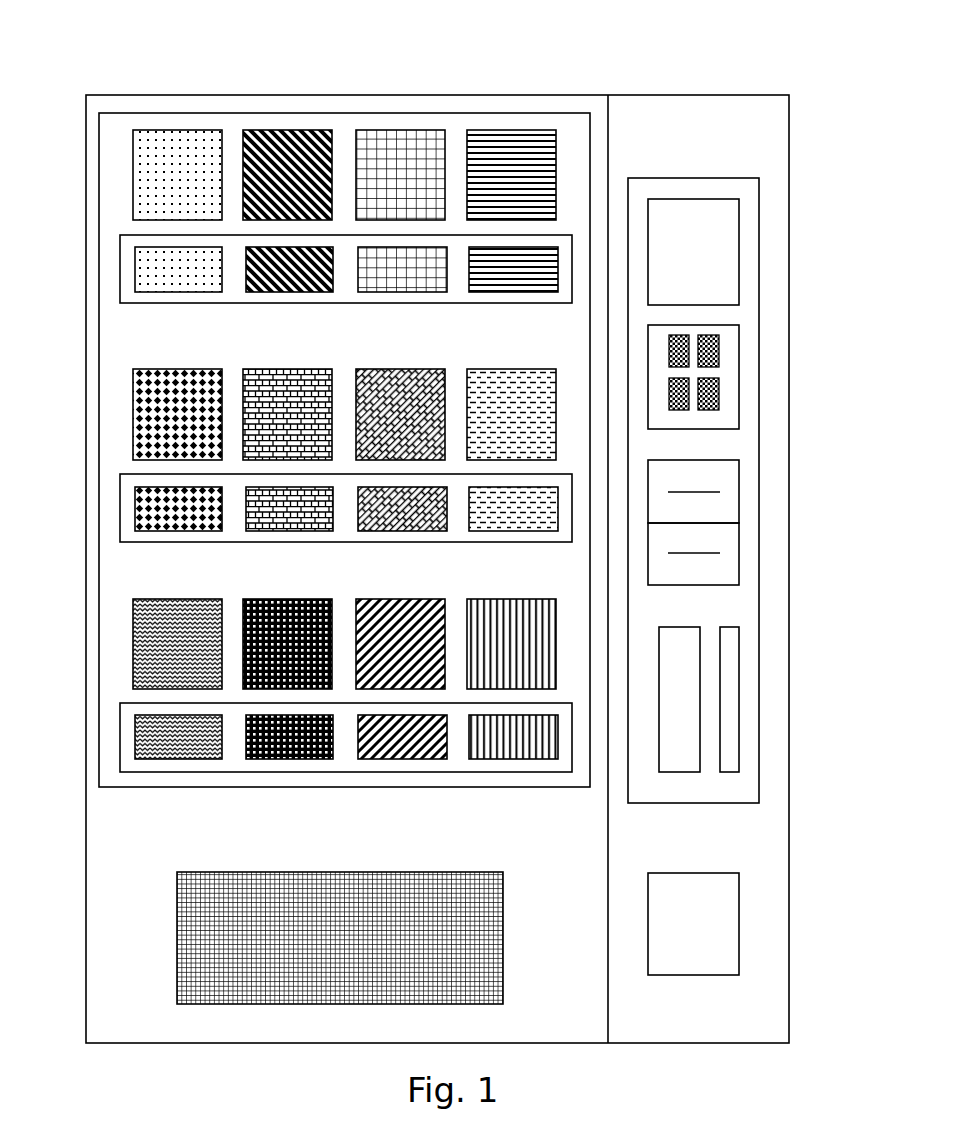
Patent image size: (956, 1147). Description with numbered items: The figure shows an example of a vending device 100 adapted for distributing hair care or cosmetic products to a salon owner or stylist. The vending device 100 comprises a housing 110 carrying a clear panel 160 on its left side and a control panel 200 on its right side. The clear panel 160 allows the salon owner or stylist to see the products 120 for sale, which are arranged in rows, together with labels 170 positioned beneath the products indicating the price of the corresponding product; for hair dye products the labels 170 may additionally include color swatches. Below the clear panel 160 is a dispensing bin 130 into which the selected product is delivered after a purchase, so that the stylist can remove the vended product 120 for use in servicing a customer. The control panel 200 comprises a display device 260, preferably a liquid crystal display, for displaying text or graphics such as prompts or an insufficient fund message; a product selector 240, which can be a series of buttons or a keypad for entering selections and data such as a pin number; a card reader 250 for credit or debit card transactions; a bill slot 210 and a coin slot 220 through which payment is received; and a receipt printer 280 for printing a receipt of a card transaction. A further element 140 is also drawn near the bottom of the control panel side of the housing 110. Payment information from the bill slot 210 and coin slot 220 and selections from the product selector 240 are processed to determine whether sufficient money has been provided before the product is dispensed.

The vending device 100 is at (524, 95).
The housing 110 is at (225, 94).
The products 120 is at (400, 130).
The dispensing bin 130 is at (503, 937).
The dispensing port 140 is at (691, 975).
The clear panel 160 is at (120, 348).
The labels 170 is at (180, 293).
The control panel 200 is at (739, 178).
The bill slot 210 is at (739, 575).
The coin slot 220 is at (739, 710).
The product selector 240 is at (739, 398).
The card reader 250 is at (739, 502).
The display device 260 is at (739, 242).
The receipt printer 280 is at (680, 772).